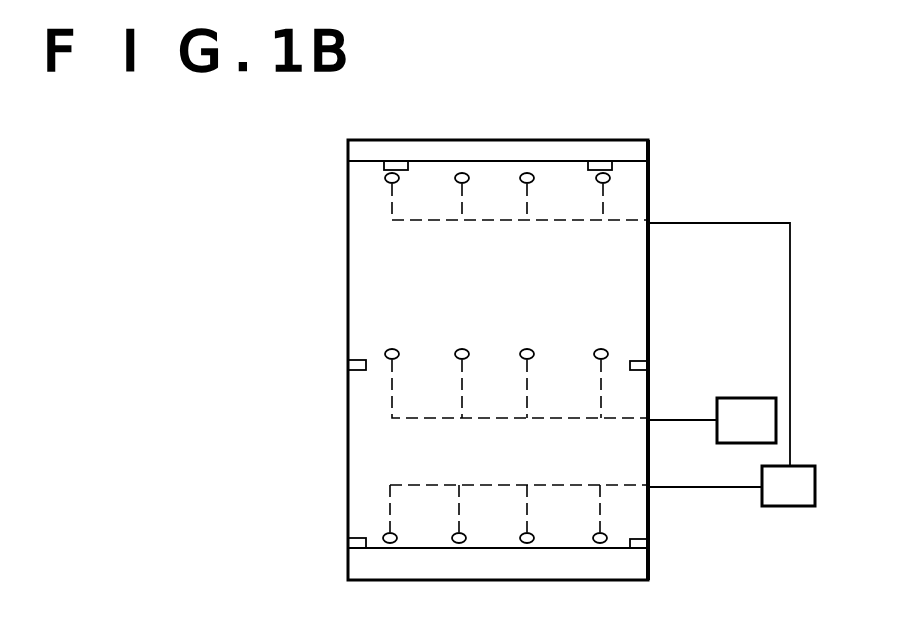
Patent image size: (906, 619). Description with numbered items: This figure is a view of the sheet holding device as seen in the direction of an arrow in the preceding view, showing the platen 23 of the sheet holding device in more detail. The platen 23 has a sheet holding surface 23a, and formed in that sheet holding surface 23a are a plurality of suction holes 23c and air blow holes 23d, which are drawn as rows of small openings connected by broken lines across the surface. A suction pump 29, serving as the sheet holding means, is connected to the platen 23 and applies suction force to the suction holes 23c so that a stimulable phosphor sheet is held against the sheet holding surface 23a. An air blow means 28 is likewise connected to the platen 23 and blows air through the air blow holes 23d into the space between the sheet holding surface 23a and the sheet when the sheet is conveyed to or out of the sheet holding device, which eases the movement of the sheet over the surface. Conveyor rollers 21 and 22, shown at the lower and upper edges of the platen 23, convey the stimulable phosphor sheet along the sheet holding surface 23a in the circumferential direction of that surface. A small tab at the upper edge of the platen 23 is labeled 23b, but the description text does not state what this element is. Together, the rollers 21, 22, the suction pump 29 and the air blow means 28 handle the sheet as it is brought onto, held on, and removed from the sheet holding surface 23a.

The conveyor roller 21 is at (355, 543).
The conveyor roller 22 is at (354, 359).
The platen 23 is at (660, 147).
The sheet holding surface 23a is at (648, 256).
The connection tab 23b is at (603, 159).
The suction holes 23c is at (606, 182).
The air blow holes 23d is at (606, 351).
The air blow means 28 is at (712, 420).
The suction pump 29 is at (731, 364).